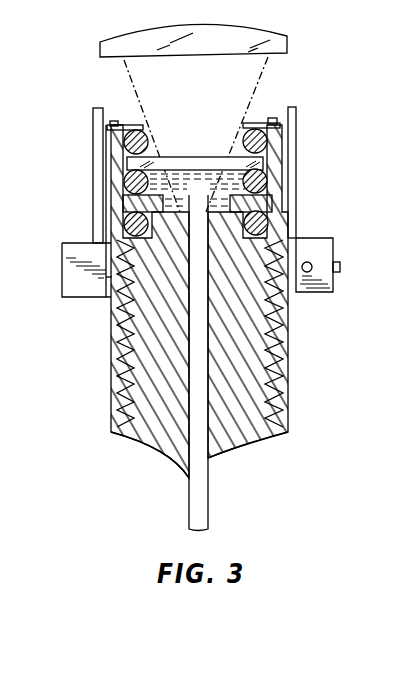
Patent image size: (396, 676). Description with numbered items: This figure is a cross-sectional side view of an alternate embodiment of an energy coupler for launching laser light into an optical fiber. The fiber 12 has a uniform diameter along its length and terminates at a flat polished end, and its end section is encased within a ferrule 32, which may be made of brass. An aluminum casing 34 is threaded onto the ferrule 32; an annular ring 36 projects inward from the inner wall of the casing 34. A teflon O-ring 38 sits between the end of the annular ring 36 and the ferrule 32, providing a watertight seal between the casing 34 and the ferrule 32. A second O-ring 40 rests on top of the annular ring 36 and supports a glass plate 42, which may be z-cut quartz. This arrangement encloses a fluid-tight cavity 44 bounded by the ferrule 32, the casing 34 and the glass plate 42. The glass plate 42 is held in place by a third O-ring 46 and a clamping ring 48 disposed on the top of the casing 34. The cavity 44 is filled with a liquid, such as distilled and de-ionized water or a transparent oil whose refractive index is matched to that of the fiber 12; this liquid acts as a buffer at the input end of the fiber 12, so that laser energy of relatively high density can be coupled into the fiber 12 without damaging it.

The fiber 12 is at (197, 495).
The ferrule 32 is at (252, 420).
The aluminum casing 34 is at (289, 374).
The annular ring 36 is at (255, 204).
The teflon O-ring 38 is at (268, 228).
The second O-ring 40 is at (268, 188).
The glass plate 42 is at (213, 155).
The fluid-tight cavity 44 is at (182, 182).
The third O-ring 46 is at (298, 142).
The clamping ring 48 is at (258, 122).